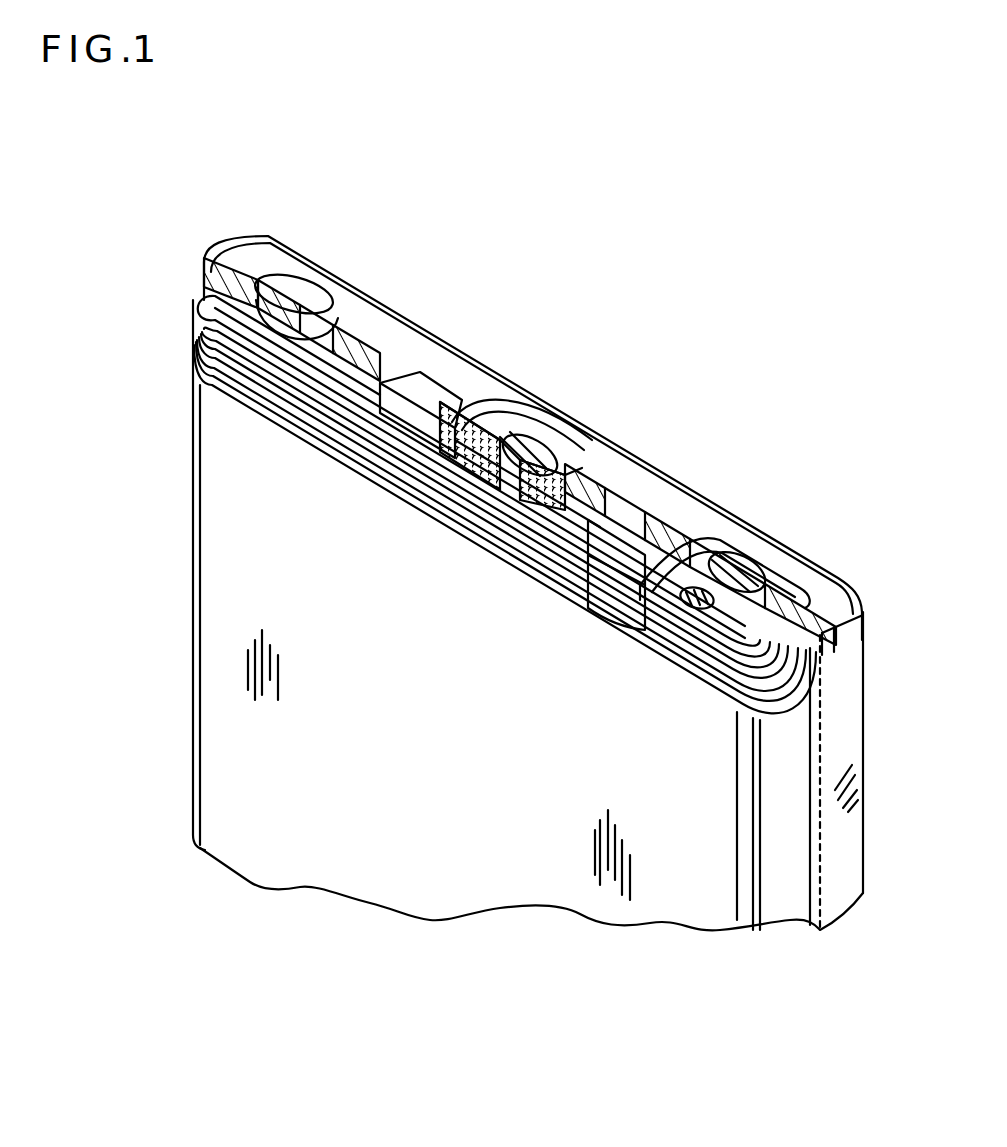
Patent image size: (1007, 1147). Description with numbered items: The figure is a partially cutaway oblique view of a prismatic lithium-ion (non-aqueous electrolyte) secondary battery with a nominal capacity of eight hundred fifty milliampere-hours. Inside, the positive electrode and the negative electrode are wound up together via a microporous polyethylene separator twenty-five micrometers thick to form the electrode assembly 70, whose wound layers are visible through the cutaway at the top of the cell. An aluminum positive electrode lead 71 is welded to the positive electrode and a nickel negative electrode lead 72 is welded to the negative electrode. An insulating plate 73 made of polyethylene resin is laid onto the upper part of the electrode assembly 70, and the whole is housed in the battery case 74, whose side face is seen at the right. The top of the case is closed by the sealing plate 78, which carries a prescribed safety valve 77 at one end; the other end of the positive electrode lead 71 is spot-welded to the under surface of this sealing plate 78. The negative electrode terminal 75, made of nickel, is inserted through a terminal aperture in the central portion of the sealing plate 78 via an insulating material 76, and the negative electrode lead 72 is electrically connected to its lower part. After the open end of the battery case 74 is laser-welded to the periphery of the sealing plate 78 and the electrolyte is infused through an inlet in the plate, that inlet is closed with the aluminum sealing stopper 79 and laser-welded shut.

The electrode assembly 70 is at (258, 566).
The positive electrode lead 71 is at (630, 562).
The negative electrode lead 72 is at (408, 420).
The insulating plate 73 is at (223, 313).
The battery case 74 is at (842, 693).
The negative electrode terminal 75 is at (530, 440).
The insulating material 76 is at (455, 400).
The safety valve 77 is at (296, 318).
The sealing plate 78 is at (378, 335).
The sealing stopper 79 is at (747, 578).